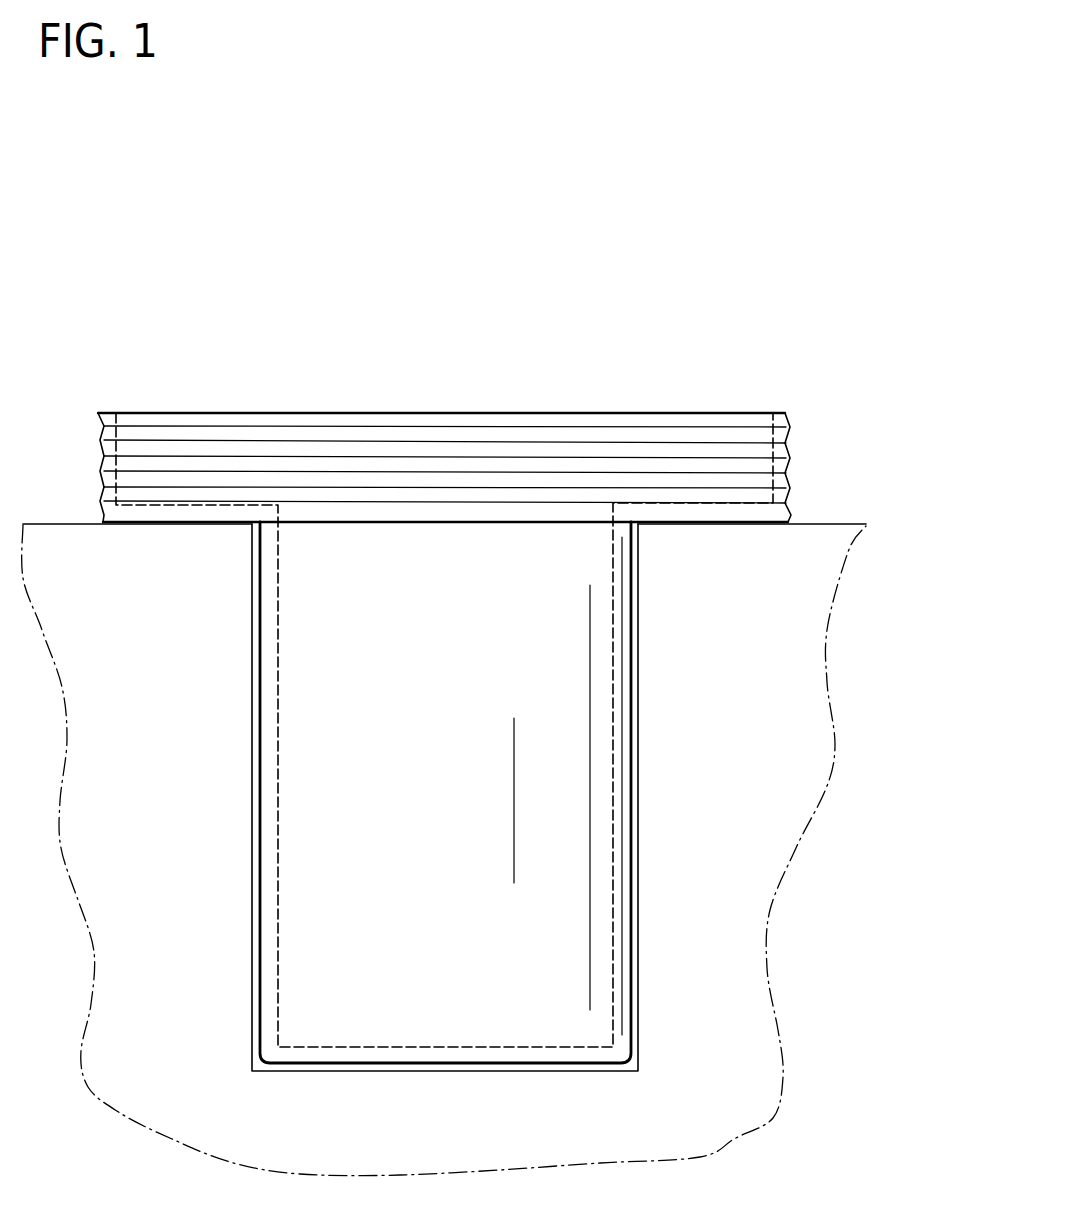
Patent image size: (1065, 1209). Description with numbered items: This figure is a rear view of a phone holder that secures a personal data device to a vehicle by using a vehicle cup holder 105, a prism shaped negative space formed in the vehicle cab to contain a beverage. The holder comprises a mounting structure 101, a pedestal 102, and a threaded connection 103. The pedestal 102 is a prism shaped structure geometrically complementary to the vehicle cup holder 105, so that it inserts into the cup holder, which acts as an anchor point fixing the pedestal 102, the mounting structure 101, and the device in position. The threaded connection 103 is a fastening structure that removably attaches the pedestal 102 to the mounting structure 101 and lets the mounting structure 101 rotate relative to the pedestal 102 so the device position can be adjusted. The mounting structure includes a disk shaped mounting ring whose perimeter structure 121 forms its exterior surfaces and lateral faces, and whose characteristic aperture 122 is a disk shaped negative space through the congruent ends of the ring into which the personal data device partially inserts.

The mounting structure 101 is at (857, 448).
The pedestal 102 is at (632, 705).
The vehicle cup holder 105 is at (638, 579).
The threaded connection 103 is at (199, 470).
The characteristic aperture 122 is at (603, 443).
The perimeter structure 121 is at (780, 410).